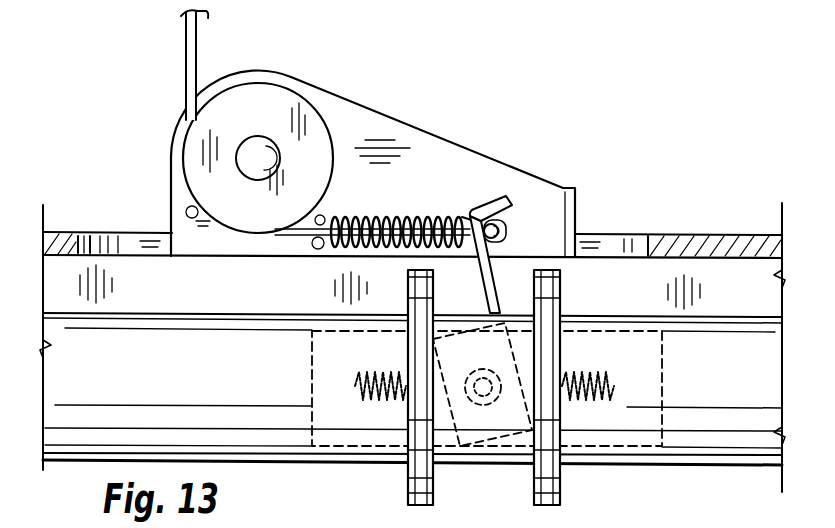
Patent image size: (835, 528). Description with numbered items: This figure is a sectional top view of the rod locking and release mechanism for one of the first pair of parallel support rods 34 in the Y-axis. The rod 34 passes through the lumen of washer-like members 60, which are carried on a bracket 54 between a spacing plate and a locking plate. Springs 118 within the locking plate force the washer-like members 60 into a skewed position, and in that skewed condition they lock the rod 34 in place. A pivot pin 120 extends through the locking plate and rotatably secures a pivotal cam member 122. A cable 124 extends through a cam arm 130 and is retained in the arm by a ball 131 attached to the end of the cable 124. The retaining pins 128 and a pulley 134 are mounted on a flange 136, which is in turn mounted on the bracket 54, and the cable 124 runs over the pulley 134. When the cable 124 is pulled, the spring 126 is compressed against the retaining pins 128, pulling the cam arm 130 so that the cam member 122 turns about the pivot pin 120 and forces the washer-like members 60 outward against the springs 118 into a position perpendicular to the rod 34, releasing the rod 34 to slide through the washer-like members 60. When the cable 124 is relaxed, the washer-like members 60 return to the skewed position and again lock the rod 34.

The support rod 34 is at (737, 442).
The bracket 54 is at (731, 235).
The washer-like member 60 is at (563, 288).
The springs 118 is at (614, 386).
The pivot pin 120 is at (557, 351).
The cam member 122 is at (483, 447).
The cable 124 is at (192, 66).
The spring 126 is at (421, 222).
The retaining pins 128 is at (320, 257).
The cam arm 130 is at (498, 292).
The ball 131 is at (515, 215).
The pulley 134 is at (248, 97).
The flange 136 is at (360, 117).